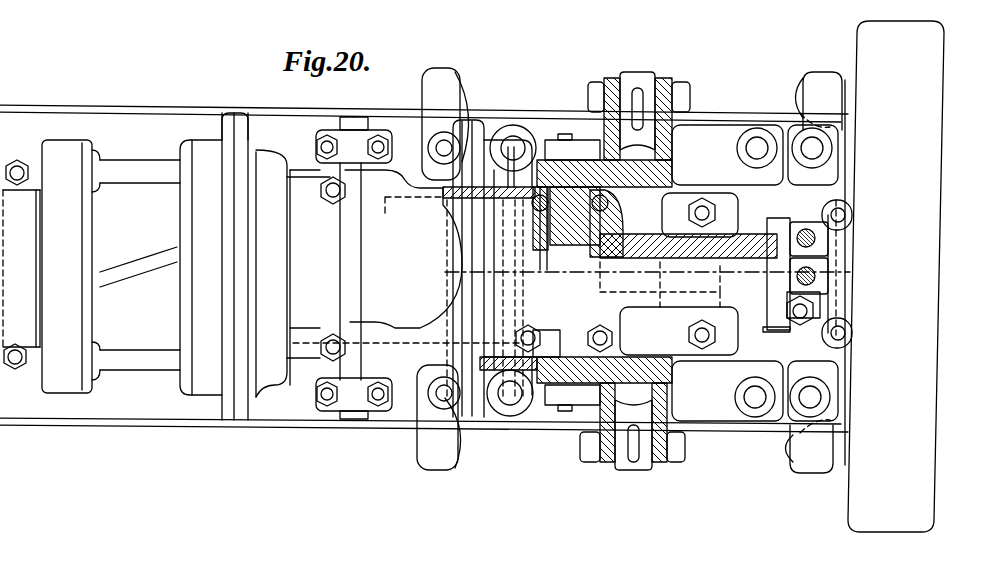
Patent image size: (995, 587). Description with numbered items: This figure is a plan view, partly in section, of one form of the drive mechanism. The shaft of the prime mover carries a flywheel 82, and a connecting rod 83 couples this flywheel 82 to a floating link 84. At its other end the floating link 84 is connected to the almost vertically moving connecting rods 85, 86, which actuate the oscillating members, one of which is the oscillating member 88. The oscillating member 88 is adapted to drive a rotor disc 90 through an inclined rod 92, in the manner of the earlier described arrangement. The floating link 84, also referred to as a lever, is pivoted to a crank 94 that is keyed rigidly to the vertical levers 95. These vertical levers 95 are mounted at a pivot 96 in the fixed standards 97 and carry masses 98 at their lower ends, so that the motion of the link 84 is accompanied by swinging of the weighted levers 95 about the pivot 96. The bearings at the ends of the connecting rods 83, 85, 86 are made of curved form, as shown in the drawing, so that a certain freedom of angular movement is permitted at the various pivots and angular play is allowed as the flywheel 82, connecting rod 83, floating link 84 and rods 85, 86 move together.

The flywheel 82 is at (905, 345).
The connecting rod 83 is at (816, 276).
The floating link 84 is at (418, 207).
The connecting rod 85 is at (353, 393).
The connecting rod 86 is at (347, 150).
The oscillating member 88 is at (248, 365).
The rotor disc 90 is at (56, 352).
The inclined rod 92 is at (133, 172).
The crank 94 is at (548, 160).
The vertical lever 95 is at (617, 81).
The pivot 96 is at (643, 447).
The fixed standard 97 is at (672, 146).
The mass 98 is at (680, 95).